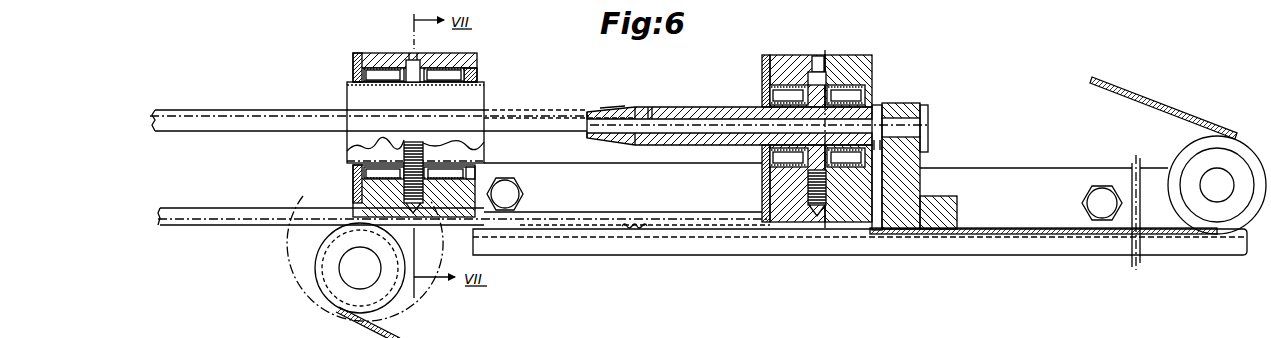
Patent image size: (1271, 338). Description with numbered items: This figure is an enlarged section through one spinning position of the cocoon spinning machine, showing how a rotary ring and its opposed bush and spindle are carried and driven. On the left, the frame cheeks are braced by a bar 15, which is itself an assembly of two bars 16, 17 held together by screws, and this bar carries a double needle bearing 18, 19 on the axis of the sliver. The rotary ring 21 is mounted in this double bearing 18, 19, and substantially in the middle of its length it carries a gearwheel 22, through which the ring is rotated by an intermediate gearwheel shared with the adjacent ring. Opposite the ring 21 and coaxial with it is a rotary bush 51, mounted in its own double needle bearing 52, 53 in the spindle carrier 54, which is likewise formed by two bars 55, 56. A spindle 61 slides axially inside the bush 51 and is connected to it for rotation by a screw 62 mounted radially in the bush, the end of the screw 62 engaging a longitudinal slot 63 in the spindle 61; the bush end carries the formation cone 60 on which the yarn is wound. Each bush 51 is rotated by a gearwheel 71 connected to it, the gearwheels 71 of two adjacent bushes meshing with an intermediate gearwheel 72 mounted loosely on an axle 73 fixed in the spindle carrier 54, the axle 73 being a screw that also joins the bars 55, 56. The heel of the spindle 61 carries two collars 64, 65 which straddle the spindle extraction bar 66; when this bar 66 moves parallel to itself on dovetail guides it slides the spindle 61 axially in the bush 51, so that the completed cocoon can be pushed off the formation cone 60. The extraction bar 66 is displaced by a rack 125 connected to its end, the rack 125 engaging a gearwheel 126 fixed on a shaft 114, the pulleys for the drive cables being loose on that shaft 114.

The bar 15 is at (427, 52).
The bar 16 is at (383, 65).
The bar 17 is at (470, 53).
The double bearing 18 is at (378, 72).
The double bearing 19 is at (465, 77).
The rotary ring 21 is at (473, 102).
The gearwheel 22 is at (437, 241).
The rotary bush 51 is at (687, 107).
The double needle bearing 52 is at (783, 95).
The double needle bearing 53 is at (850, 97).
The spindle carrier 54 is at (828, 55).
The bar 55 is at (787, 62).
The bar 56 is at (862, 57).
The formation cone 60 is at (608, 107).
The spindle 61 is at (260, 120).
The screw 62 is at (651, 116).
The longitudinal slot 63 is at (548, 114).
The collar 64 is at (877, 112).
The collar 65 is at (927, 113).
The spindle extraction bar 66 is at (903, 180).
The gearwheel 71 is at (777, 79).
The intermediate gearwheel 72 is at (817, 188).
The axle 73 is at (874, 168).
The shaft 114 is at (348, 271).
The rack 125 is at (247, 213).
The gearwheel 126 is at (393, 298).